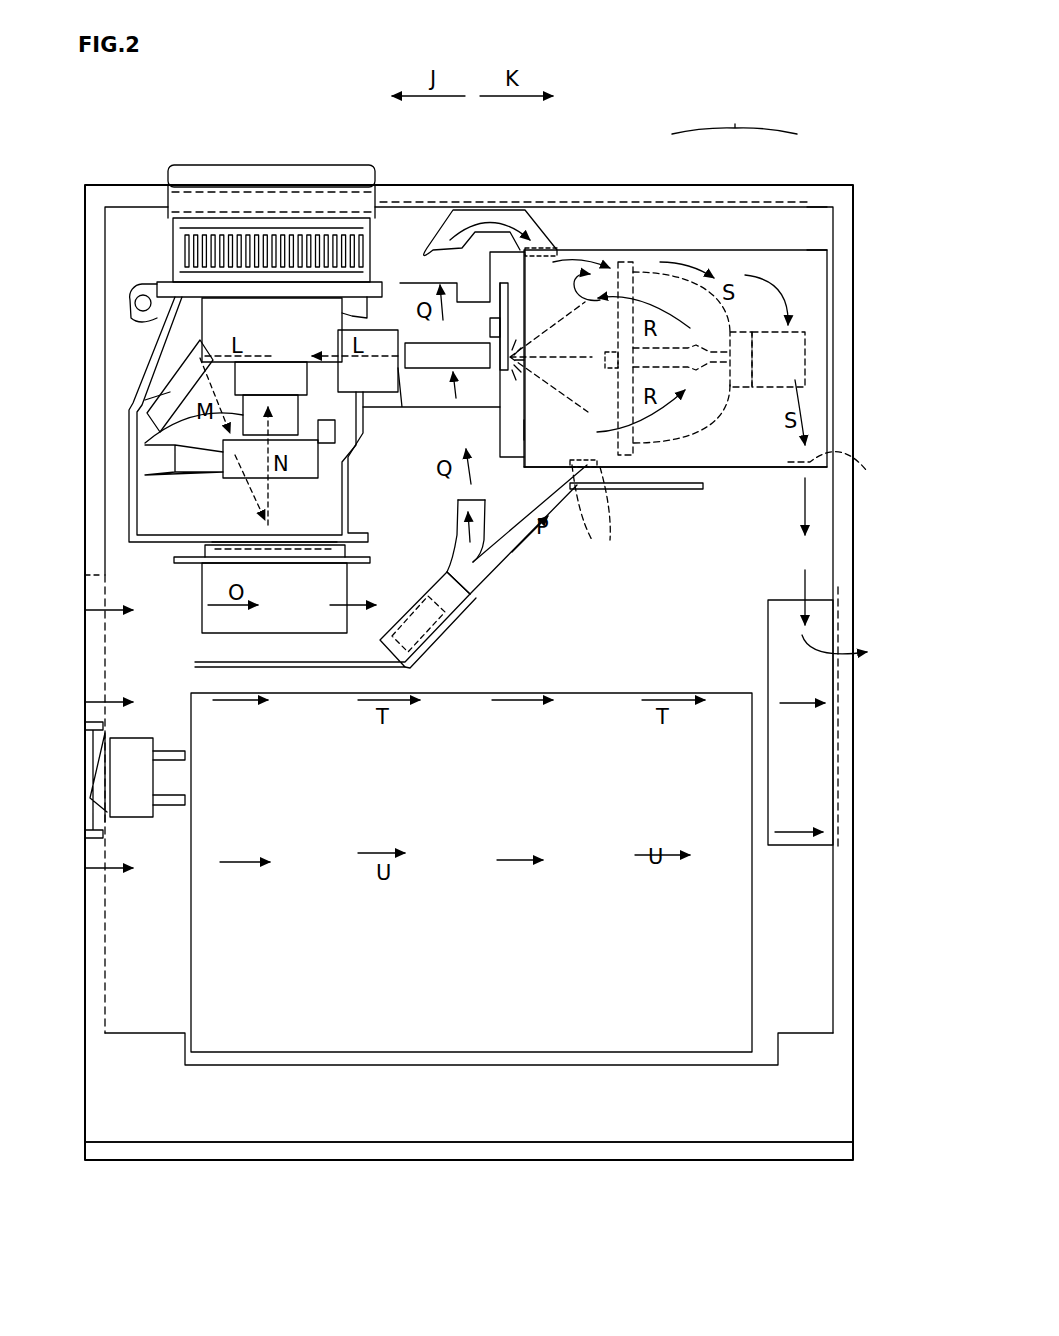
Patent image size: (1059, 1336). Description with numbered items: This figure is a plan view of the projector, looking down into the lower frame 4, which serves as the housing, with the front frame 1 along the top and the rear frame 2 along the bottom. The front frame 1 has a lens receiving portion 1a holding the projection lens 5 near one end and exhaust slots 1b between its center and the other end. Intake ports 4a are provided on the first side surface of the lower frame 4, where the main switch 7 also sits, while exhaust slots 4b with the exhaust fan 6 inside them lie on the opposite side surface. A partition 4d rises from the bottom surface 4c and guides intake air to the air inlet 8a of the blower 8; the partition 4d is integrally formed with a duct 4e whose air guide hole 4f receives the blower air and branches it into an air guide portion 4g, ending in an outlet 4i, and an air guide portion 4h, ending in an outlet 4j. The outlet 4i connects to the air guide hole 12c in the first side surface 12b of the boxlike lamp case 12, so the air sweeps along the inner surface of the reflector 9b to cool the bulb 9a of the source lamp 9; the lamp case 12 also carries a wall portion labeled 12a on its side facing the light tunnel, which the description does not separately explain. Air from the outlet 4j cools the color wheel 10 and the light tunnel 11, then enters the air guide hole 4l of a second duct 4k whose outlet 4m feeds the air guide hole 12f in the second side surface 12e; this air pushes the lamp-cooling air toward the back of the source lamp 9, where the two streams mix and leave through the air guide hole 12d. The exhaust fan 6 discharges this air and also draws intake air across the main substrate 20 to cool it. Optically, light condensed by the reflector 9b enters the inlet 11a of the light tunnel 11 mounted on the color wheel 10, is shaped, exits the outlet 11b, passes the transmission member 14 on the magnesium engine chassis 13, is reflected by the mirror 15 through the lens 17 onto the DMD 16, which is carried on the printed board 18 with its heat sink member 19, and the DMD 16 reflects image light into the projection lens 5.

The front frame 1 is at (147, 195).
The lens receiving portion 1a is at (170, 212).
The exhaust slots 1b is at (612, 205).
The rear frame 2 is at (812, 1107).
The lower frame 4 is at (95, 524).
The intake ports 4a is at (97, 655).
The exhaust slots 4b is at (845, 732).
The bottom surface 4c is at (797, 995).
The partition 4d is at (658, 490).
The duct 4e is at (477, 577).
The air guide hole 4f is at (470, 597).
The air guide portion 4g is at (508, 548).
The air guide portion 4h is at (460, 535).
The outlet 4j is at (462, 497).
The outlet 4i is at (592, 502).
The duct 4k is at (456, 212).
The air guide hole 4l is at (425, 250).
The outlet 4m is at (553, 250).
The projection lens 5 is at (270, 205).
The exhaust fan 6 is at (820, 800).
The main switch 7 is at (125, 785).
The blower 8 is at (463, 607).
The air inlet 8a is at (390, 640).
The source lamp 9 is at (734, 117).
The bulb 9a is at (614, 335).
The reflector 9b is at (680, 295).
The color wheel 10 is at (508, 330).
The light tunnel 11 is at (468, 343).
The inlet 11a is at (500, 442).
The outlet 11b is at (398, 375).
The lamp case 12 is at (834, 296).
The lamp housing left wall 12a is at (518, 422).
The first side surface 12b is at (740, 470).
The air guide hole 12c is at (595, 517).
The air guide hole 12d is at (850, 479).
The second side surface 12e is at (773, 248).
The air guide hole 12f is at (557, 257).
The engine chassis 13 is at (150, 372).
The transmission member 14 is at (383, 338).
The mirror 15 is at (160, 412).
The DMD 16 is at (258, 558).
The lens 17 is at (190, 453).
The printed board 18 is at (200, 560).
The heat sink member 19 is at (240, 625).
The main substrate 20 is at (462, 692).